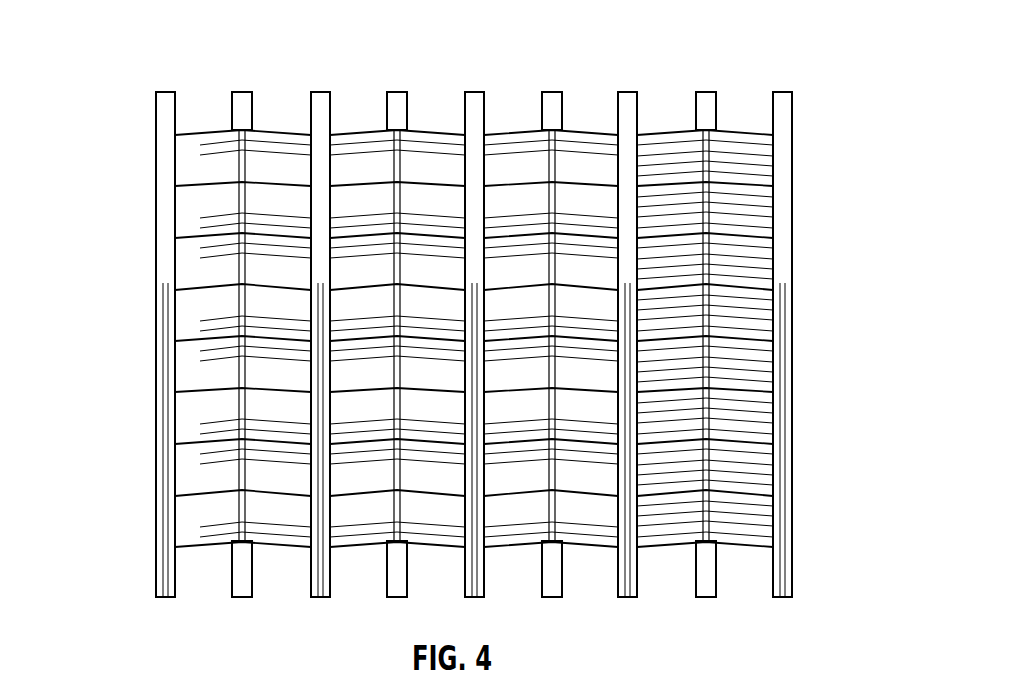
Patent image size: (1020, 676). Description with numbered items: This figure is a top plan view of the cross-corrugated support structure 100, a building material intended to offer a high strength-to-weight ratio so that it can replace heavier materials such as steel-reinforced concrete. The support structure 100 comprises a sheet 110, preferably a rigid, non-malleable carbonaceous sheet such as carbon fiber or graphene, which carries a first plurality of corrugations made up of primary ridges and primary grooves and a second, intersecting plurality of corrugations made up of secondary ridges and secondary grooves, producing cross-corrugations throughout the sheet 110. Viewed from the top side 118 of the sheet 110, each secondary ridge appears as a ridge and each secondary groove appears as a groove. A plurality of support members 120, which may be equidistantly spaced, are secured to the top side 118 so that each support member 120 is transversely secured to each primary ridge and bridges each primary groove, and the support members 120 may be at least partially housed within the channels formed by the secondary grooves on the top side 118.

The cross-corrugated support structure 100 is at (106, 35).
The sheet 110 is at (517, 167).
The top side 118 is at (206, 157).
The support member 120 is at (704, 104).